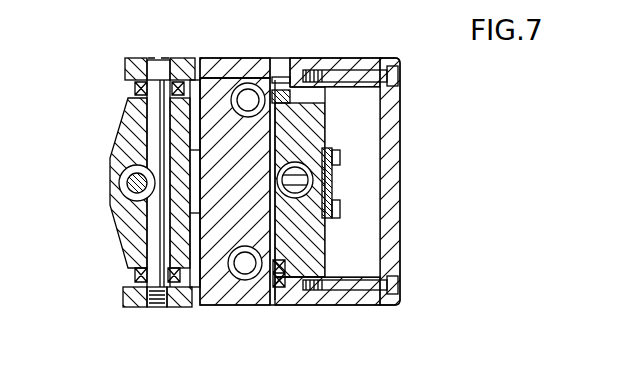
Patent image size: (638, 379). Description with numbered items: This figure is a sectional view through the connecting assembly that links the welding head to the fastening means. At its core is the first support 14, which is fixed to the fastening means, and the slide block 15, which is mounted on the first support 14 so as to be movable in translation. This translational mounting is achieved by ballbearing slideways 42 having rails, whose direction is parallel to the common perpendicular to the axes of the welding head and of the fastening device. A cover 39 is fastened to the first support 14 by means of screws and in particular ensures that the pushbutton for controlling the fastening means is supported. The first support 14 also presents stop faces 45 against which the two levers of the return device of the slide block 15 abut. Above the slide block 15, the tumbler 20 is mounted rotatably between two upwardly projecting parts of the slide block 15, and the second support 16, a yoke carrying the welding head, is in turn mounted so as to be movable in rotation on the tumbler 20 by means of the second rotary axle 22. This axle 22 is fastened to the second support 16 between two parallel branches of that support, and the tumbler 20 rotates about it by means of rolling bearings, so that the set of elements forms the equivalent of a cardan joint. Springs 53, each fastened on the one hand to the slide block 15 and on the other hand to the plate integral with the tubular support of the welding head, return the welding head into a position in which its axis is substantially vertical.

The first support 14 is at (310, 121).
The slide block 15 is at (226, 57).
The second support 16 is at (179, 56).
The tumbler 20 is at (125, 130).
The second rotary axle 22 is at (150, 237).
The cover 39 is at (398, 132).
The ballbearing slideways 42 is at (287, 58).
The stop faces 45 is at (331, 184).
The springs 53 is at (258, 58).